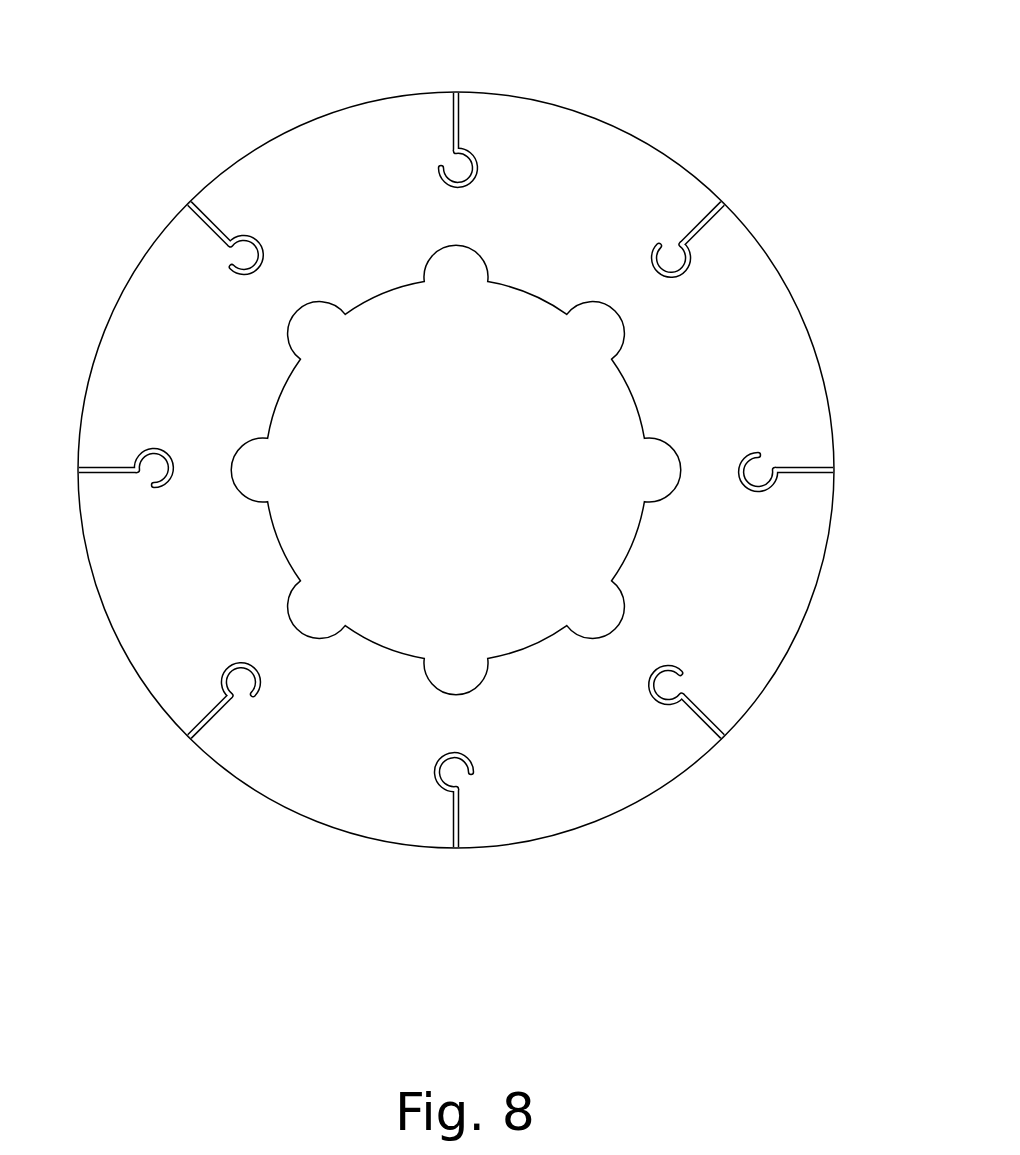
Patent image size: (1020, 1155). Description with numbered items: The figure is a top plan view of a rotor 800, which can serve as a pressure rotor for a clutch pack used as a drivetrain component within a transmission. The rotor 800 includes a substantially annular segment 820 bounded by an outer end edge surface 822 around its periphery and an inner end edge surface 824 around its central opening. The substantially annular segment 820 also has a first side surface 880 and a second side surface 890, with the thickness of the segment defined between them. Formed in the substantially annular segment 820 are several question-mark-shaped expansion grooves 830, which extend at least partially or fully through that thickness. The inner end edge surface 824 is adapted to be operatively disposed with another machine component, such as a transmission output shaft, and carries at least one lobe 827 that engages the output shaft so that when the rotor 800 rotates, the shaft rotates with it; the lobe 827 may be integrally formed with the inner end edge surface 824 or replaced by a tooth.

The rotor 800 is at (739, 80).
The substantially annular segment 820 is at (788, 342).
The outer end edge surface 822 is at (575, 832).
The inner end edge surface 824 is at (365, 302).
The lobe 827 is at (233, 460).
The question-mark-shaped expansion groove 830 is at (722, 740).
The first side surface 880 is at (202, 322).
The second side surface 890 is at (368, 102).